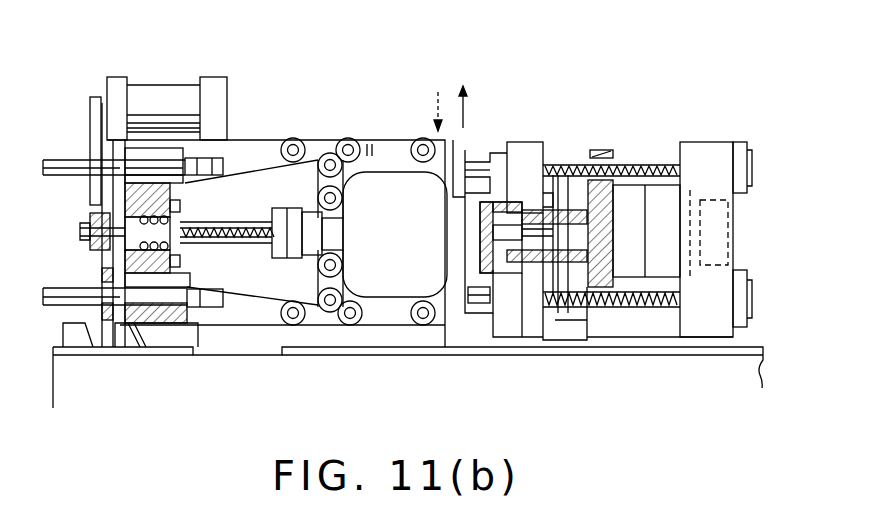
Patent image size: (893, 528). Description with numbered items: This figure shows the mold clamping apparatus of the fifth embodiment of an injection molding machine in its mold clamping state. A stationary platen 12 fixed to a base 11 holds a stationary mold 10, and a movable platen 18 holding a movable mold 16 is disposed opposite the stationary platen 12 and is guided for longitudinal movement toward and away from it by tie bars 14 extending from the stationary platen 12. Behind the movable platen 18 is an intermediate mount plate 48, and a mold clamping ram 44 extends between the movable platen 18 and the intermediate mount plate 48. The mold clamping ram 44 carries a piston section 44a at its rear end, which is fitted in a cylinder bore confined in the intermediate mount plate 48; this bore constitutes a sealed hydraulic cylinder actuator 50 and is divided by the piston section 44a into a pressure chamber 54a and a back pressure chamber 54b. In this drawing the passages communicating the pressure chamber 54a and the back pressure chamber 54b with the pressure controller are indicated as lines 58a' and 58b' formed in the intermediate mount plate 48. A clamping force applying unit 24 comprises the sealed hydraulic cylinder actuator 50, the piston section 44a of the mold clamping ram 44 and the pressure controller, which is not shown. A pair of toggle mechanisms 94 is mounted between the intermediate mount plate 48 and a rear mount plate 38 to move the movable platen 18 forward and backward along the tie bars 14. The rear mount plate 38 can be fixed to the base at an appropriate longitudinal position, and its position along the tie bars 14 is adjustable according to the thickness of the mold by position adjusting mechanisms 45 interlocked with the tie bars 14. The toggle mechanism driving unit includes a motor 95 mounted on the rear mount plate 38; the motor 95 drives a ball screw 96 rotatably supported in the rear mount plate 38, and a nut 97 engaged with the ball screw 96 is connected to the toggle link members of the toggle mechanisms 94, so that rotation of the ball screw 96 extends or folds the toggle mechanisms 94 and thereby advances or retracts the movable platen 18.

The stationary mold 10 is at (663, 200).
The base 11 is at (318, 352).
The stationary platen 12 is at (707, 153).
The tie bars 14 is at (650, 160).
The movable mold 16 is at (628, 200).
The movable platen 18 is at (635, 337).
The clamping force applying unit 24 is at (447, 347).
The rear mount plate 38 is at (113, 347).
The mold clamping ram 44 is at (573, 205).
The piston section 44a is at (507, 268).
The position adjusting mechanisms 45 is at (83, 118).
The intermediate mount plate 48 is at (527, 162).
The sealed hydraulic cylinder actuator 50 is at (462, 258).
The pressure chamber 54a is at (452, 206).
The back pressure chamber 54b is at (528, 272).
The bracket 58a' is at (478, 237).
The bracket 58b' is at (509, 198).
The toggle mechanisms 94 is at (317, 137).
The motor 95 is at (166, 97).
The ball screw 96 is at (213, 223).
The nut 97 is at (275, 256).